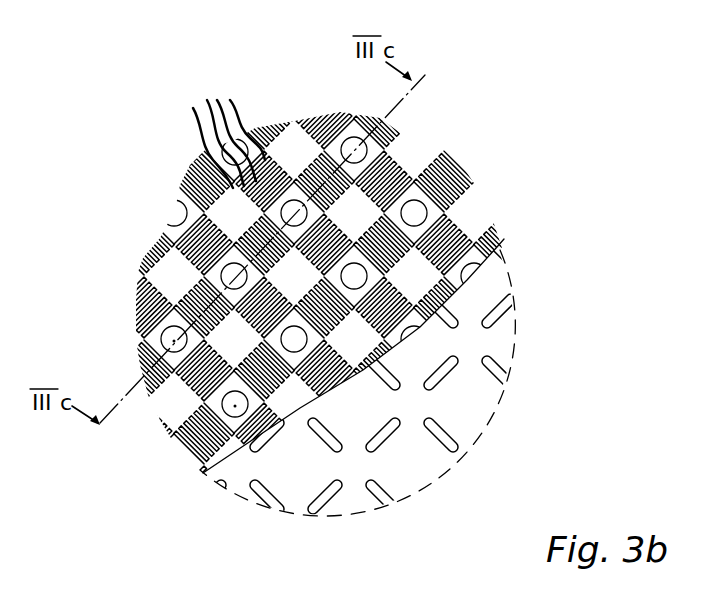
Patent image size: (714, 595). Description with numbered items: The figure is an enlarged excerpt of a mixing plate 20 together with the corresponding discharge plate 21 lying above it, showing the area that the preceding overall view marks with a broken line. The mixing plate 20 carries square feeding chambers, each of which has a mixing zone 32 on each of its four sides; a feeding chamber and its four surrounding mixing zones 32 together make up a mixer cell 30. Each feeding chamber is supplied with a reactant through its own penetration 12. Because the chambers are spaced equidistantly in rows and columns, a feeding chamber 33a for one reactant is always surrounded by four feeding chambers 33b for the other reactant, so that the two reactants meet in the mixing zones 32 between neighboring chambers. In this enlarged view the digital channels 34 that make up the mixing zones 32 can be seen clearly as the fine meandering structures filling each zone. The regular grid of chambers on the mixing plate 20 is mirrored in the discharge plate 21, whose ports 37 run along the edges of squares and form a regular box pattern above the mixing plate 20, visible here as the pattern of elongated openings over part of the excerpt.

The penetration 12 is at (212, 476).
The mixing plate 20 is at (473, 213).
The discharge plate 21 is at (405, 465).
The mixer cell 30 is at (414, 172).
The mixing zone 32 is at (181, 266).
The feeding chamber for one reactant 33a is at (226, 254).
The feeding chamber for the other reactant 33b is at (155, 340).
The digital channels 34 is at (216, 129).
The ports 37 is at (450, 367).